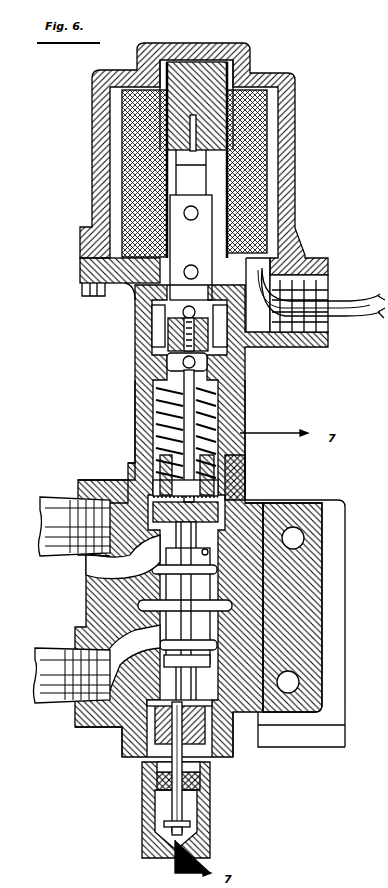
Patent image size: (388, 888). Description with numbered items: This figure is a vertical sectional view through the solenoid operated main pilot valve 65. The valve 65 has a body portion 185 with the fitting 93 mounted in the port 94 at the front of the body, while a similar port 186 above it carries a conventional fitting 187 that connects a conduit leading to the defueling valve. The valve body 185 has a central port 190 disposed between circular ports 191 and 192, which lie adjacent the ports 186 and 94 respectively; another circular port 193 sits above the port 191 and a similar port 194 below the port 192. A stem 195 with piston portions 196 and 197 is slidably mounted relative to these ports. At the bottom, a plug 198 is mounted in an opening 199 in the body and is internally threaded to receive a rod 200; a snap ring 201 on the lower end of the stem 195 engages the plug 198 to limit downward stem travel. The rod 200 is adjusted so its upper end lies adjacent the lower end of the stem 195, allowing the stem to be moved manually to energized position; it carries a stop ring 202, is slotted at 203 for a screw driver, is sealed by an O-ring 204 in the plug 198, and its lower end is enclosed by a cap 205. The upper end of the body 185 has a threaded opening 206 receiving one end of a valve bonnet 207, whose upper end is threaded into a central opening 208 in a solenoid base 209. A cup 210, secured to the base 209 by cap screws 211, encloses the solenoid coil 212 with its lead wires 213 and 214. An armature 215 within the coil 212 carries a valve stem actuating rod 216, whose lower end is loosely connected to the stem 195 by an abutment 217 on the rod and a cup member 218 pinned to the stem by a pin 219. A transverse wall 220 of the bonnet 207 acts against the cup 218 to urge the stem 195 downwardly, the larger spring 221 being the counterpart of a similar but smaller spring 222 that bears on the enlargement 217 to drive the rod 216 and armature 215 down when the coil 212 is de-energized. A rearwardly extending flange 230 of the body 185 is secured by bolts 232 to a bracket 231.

The solenoid valve 65 is at (298, 106).
The fitting 93 is at (46, 701).
The port 94 is at (112, 729).
The body portion 185 is at (82, 481).
The port 186 is at (100, 560).
The fitting 187 is at (47, 500).
The central port 190 is at (220, 596).
The circular port 191 is at (160, 570).
The circular port 192 is at (151, 622).
The circular port 193 is at (209, 552).
The port 194 is at (210, 658).
The stem 195 is at (240, 504).
The piston portion 196 is at (215, 576).
The piston portion 197 is at (212, 647).
The plug 198 is at (236, 758).
The opening 199 is at (210, 700).
The rod 200 is at (196, 806).
The snap ring 201 is at (184, 710).
The stop ring 202 is at (196, 823).
The slot 203 is at (162, 832).
The O-ring 204 is at (205, 781).
The cap 205 is at (142, 810).
The threaded opening 206 is at (238, 475).
The valve bonnet 207 is at (245, 422).
The central opening 208 is at (151, 336).
The solenoid base 209 is at (78, 272).
The cup 210 is at (90, 196).
The cap screws 211 is at (82, 294).
The solenoid coil 212 is at (272, 150).
The lead wire 213 is at (356, 301).
The lead wire 214 is at (348, 322).
The armature 215 is at (184, 192).
The valve stem actuating rod 216 is at (183, 394).
The abutment 217 is at (226, 460).
The cup member 218 is at (130, 478).
The pin 219 is at (218, 523).
The transverse wall 220 is at (150, 388).
The spring 221 is at (212, 410).
The spring 222 is at (150, 424).
The flange 230 is at (330, 506).
The bracket 231 is at (348, 740).
The bolts 232 is at (295, 527).